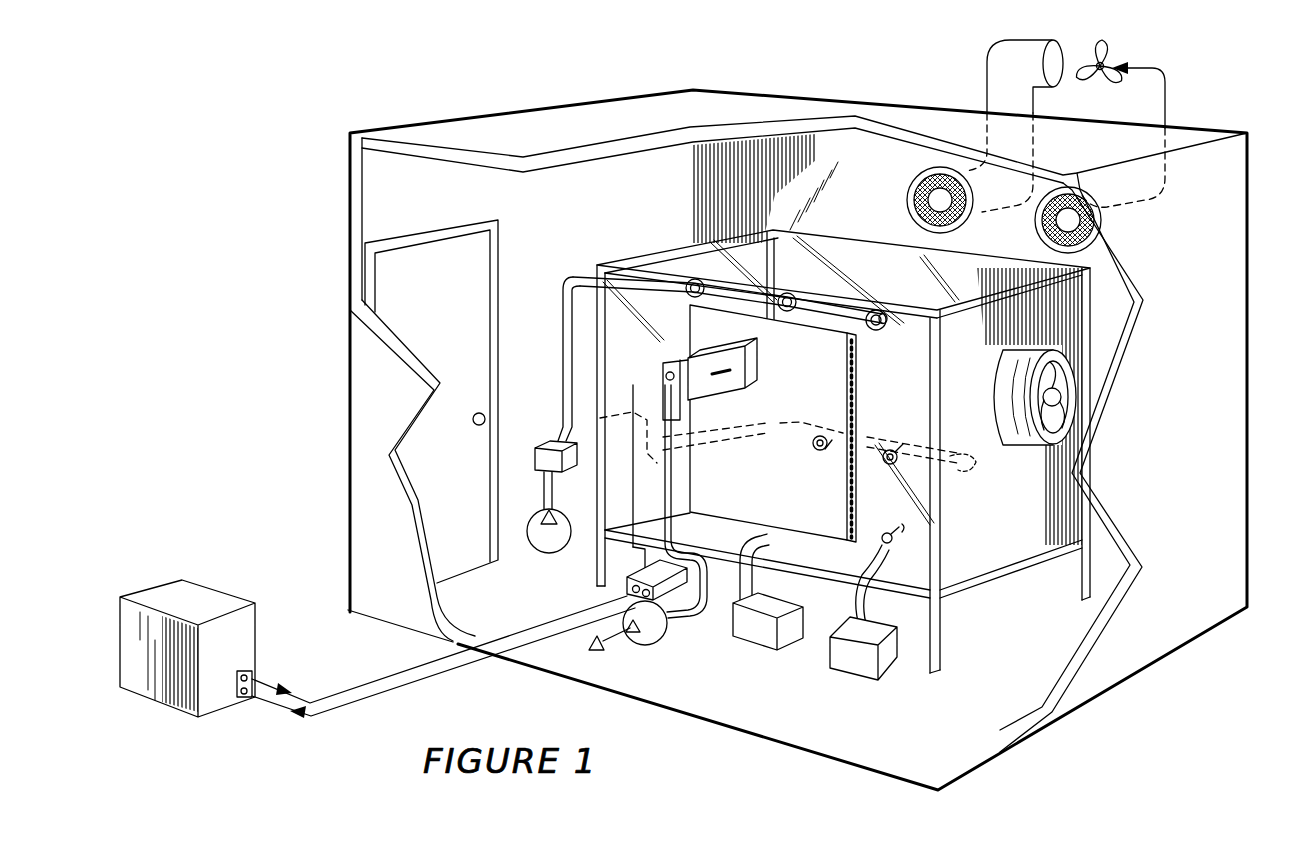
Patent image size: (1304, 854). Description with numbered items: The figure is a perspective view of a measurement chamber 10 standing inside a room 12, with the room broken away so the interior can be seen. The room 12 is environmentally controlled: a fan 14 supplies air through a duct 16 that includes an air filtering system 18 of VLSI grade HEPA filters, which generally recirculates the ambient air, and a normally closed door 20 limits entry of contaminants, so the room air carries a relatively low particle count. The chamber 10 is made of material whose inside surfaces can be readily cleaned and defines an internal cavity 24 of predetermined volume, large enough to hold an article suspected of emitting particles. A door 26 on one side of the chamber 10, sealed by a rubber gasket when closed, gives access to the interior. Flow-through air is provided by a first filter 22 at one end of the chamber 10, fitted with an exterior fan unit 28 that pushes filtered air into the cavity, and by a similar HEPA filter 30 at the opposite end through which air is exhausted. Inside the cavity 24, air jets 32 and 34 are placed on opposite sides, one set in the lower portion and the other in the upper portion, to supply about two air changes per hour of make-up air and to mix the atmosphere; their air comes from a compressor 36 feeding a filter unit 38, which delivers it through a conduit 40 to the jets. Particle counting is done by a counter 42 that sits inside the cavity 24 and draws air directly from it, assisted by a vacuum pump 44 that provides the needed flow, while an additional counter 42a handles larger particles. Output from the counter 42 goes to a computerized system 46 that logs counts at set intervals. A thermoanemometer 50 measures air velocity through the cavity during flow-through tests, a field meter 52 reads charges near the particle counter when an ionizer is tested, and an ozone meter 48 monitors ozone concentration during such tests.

The measurement chamber 10 is at (687, 256).
The room 12 is at (1217, 187).
The fan 14 is at (1103, 58).
The duct 16 is at (986, 62).
The air filtering system 18 is at (907, 194).
The door 20 is at (390, 276).
The first filter 22 is at (1080, 307).
The internal cavity 24 is at (865, 415).
The door 26 is at (745, 510).
The exterior fan unit 28 is at (1072, 395).
The HEPA filter 30 is at (617, 260).
The air jets 32 is at (888, 462).
The air jets 34 is at (702, 280).
The compressor 36 is at (543, 557).
The filter unit 38 is at (548, 442).
The conduit 40 is at (563, 337).
The counter 42 is at (695, 286).
The additional counter 42a is at (883, 319).
The vacuum pump 44 is at (663, 638).
The computerized system 46 is at (217, 603).
The ozone meter 48 is at (772, 628).
The thermoanemometer 50 is at (845, 648).
The field meter 52 is at (735, 394).